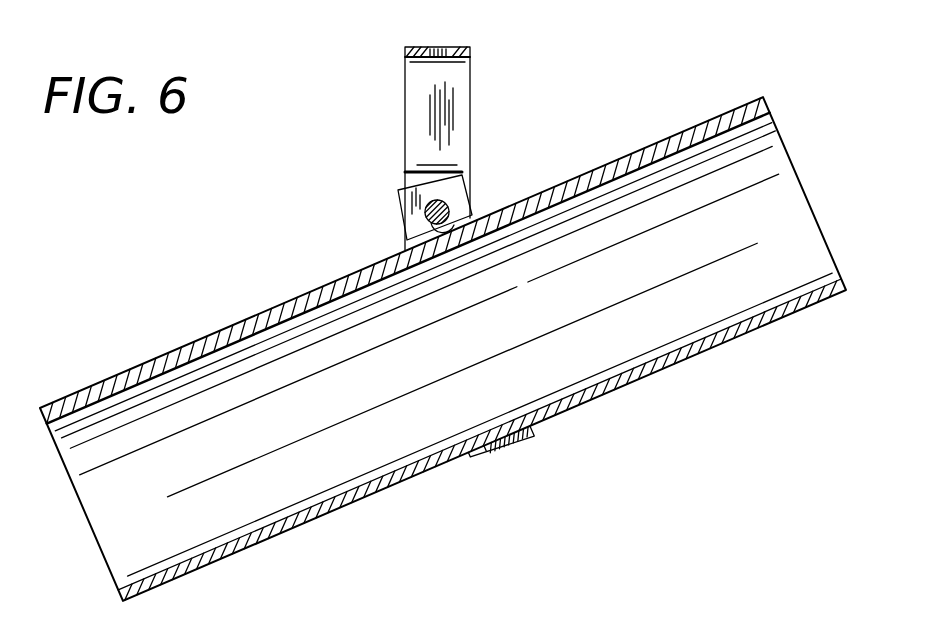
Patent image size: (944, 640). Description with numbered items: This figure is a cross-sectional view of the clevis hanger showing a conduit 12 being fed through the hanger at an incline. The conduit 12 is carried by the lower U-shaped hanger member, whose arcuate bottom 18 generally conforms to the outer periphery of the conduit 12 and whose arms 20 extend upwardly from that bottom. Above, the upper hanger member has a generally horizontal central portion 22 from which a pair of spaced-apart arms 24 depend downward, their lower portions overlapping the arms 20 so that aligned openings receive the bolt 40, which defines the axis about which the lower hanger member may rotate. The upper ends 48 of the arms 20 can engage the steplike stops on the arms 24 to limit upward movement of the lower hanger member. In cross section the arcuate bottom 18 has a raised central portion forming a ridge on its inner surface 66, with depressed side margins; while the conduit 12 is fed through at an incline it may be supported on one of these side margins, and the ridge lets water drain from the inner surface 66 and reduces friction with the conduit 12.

The conduit 12 is at (268, 310).
The arcuate bottom 18 is at (515, 445).
The arms 20 is at (420, 232).
The central portion 22 is at (452, 47).
The arms 24 is at (460, 133).
The bolt 40 is at (448, 210).
The upper ends 48 is at (420, 186).
The inner surface 66 is at (530, 433).